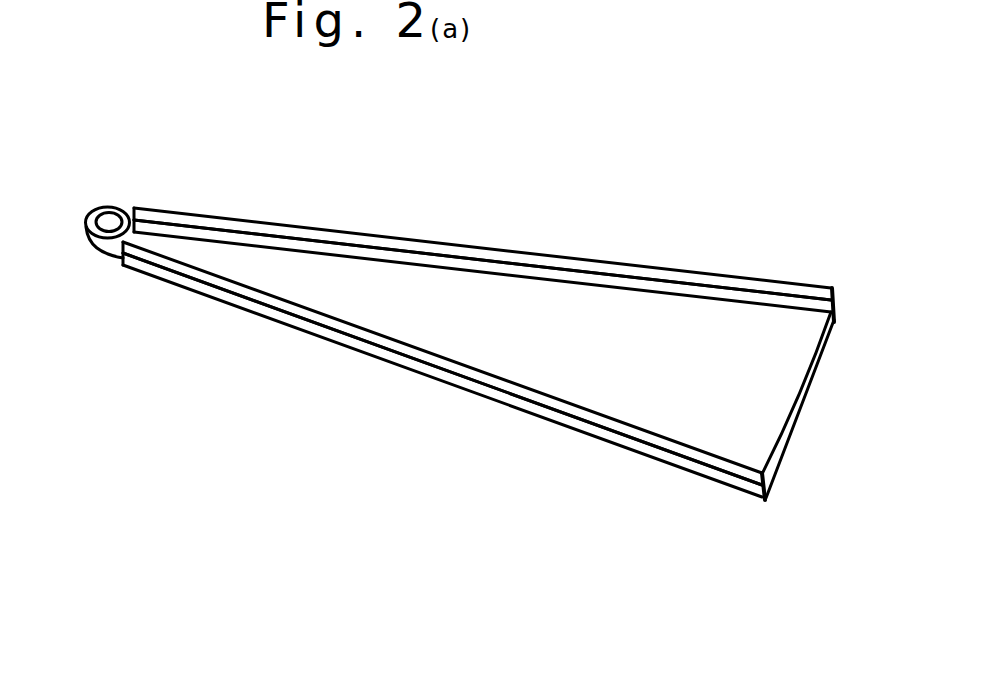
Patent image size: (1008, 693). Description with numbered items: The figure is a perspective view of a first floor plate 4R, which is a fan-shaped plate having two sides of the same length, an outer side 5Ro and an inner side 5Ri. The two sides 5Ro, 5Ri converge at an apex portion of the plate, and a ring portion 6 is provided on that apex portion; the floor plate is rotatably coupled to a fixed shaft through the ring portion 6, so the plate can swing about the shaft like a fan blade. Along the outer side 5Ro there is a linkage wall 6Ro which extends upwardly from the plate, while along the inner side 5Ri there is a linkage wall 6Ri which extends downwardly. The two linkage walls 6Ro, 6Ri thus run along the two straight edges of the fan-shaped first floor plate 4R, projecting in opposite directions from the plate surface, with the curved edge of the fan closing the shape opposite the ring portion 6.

The ring portion 6 is at (113, 212).
The outer side 5Ro is at (682, 287).
The linkage wall 6Ro is at (462, 252).
The inner side 5Ri is at (310, 320).
The linkage wall 6Ri is at (463, 388).
The first floor plate 4R is at (640, 402).